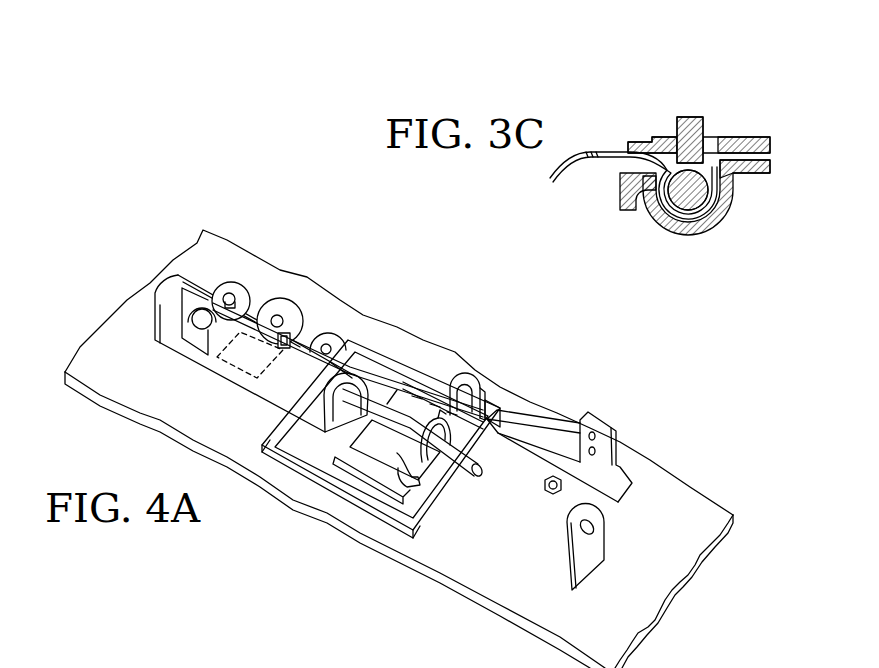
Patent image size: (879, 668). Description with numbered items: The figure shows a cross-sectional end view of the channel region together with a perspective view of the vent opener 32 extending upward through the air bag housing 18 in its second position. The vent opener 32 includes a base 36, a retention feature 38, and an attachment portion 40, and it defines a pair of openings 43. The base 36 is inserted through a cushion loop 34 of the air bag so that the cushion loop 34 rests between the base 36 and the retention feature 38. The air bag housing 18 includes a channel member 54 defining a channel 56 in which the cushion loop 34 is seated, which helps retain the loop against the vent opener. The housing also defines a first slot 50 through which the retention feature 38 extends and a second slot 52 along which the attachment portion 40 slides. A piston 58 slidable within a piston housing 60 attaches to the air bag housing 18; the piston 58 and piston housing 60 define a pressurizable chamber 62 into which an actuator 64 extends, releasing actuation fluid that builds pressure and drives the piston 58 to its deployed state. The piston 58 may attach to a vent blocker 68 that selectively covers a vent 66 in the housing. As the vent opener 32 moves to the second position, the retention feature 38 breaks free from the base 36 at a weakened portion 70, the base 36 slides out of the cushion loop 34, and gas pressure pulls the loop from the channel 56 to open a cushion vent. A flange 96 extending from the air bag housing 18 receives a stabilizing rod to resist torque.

In FIG. 3C, the air bag housing 18 is at (647, 141).
In FIG. 4A, the air bag housing 18 is at (145, 381).
In FIG. 3C, the vent opener 32 is at (704, 128).
In FIG. 4A, the vent opener 32 is at (637, 462).
In FIG. 3C, the cushion loop 34 is at (640, 170).
In FIG. 4A, the cushion loop 34 is at (195, 667).
In FIG. 3C, the base 36 is at (727, 193).
In FIG. 3C, the retention feature 38 is at (692, 117).
In FIG. 4A, the retention feature 38 is at (474, 375).
In FIG. 4A, the attachment portion 40 is at (603, 420).
In FIG. 4A, the openings 43 is at (617, 447).
In FIG. 4A, the first slot 50 is at (407, 377).
In FIG. 4A, the second slot 52 is at (512, 420).
In FIG. 3C, the channel member 54 is at (688, 240).
In FIG. 3C, the channel 56 is at (743, 175).
In FIG. 4A, the piston 58 is at (467, 473).
In FIG. 4A, the piston housing 60 is at (350, 376).
In FIG. 4A, the pressurizable chamber 62 is at (278, 332).
In FIG. 4A, the actuator 64 is at (326, 396).
In FIG. 4A, the vent 66 is at (380, 450).
In FIG. 4A, the vent blocker 68 is at (398, 470).
In FIG. 4A, the weakened portion 70 is at (500, 405).
In FIG. 4A, the flange 96 is at (603, 532).